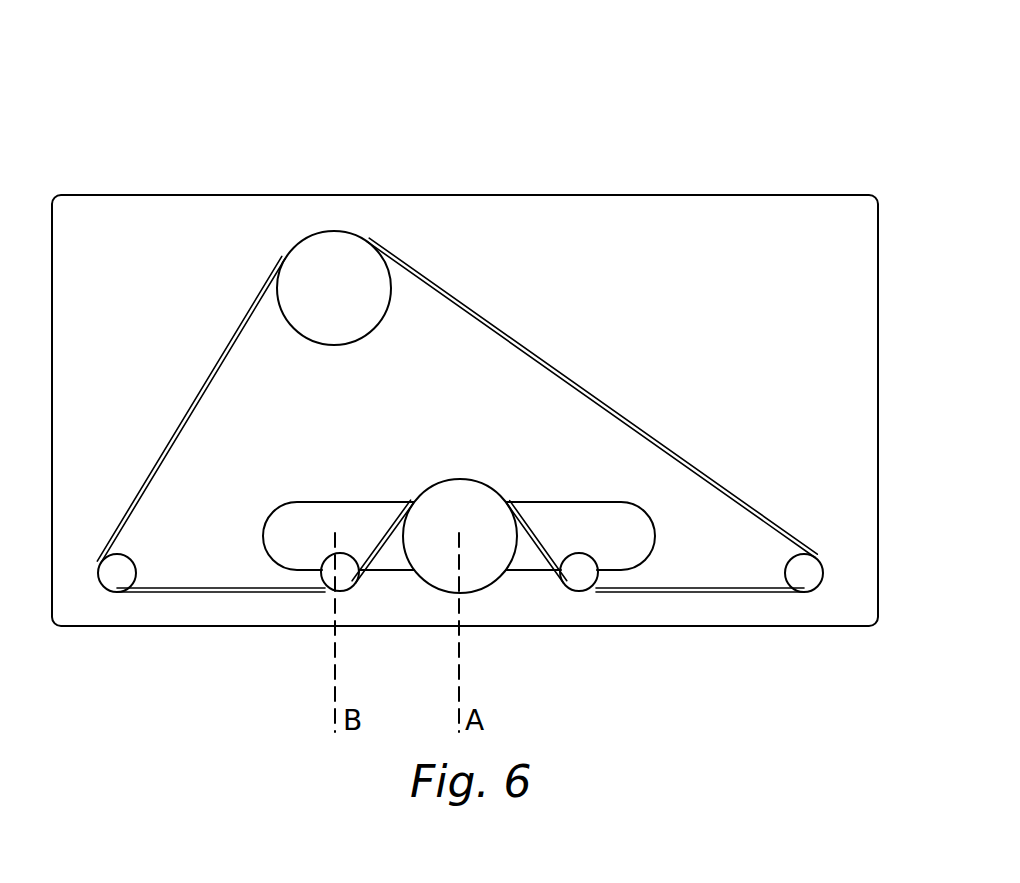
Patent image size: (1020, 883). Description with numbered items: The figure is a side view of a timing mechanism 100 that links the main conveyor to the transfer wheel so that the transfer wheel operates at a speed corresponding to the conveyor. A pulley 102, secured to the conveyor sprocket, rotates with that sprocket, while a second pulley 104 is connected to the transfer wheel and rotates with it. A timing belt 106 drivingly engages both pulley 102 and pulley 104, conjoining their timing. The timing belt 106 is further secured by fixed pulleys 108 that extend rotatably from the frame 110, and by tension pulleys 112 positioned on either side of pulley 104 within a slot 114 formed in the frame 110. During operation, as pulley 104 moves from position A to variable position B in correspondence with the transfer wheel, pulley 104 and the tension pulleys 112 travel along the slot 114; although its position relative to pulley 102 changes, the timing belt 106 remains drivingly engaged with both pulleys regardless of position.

The timing mechanism 100 is at (460, 86).
The pulley 102 is at (355, 238).
The pulley 104 is at (485, 591).
The timing belt 106 is at (568, 380).
The fixed pulleys 108 is at (110, 592).
The frame 110 is at (283, 195).
The tension pulleys 112 is at (328, 591).
The slot 114 is at (653, 553).